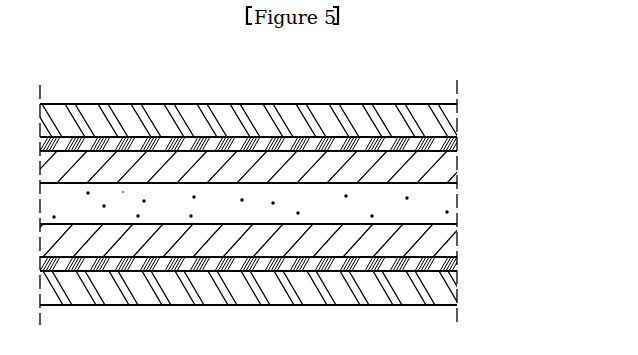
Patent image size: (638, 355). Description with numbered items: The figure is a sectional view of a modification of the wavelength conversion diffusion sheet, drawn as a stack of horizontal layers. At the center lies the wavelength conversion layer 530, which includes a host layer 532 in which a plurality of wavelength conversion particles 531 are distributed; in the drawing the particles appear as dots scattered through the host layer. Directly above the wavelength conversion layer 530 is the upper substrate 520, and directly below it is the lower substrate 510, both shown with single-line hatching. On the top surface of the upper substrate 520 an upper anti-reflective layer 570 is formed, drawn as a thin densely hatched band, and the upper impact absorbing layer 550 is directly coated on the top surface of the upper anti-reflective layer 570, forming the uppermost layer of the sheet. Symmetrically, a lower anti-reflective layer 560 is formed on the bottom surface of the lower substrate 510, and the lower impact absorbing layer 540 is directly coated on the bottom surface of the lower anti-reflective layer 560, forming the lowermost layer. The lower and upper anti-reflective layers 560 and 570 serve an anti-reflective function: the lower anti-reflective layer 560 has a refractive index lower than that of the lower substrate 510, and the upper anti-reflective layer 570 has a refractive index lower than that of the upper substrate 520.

The upper impact absorbing layer 550 is at (458, 118).
The upper anti-reflective layer 570 is at (458, 141).
The upper substrate 520 is at (458, 165).
The wavelength conversion layer 530 is at (296, 204).
The host layer 532 is at (448, 200).
The wavelength conversion particles 531 is at (450, 212).
The lower substrate 510 is at (458, 235).
The lower anti-reflective layer 560 is at (458, 263).
The lower impact absorbing layer 540 is at (458, 288).